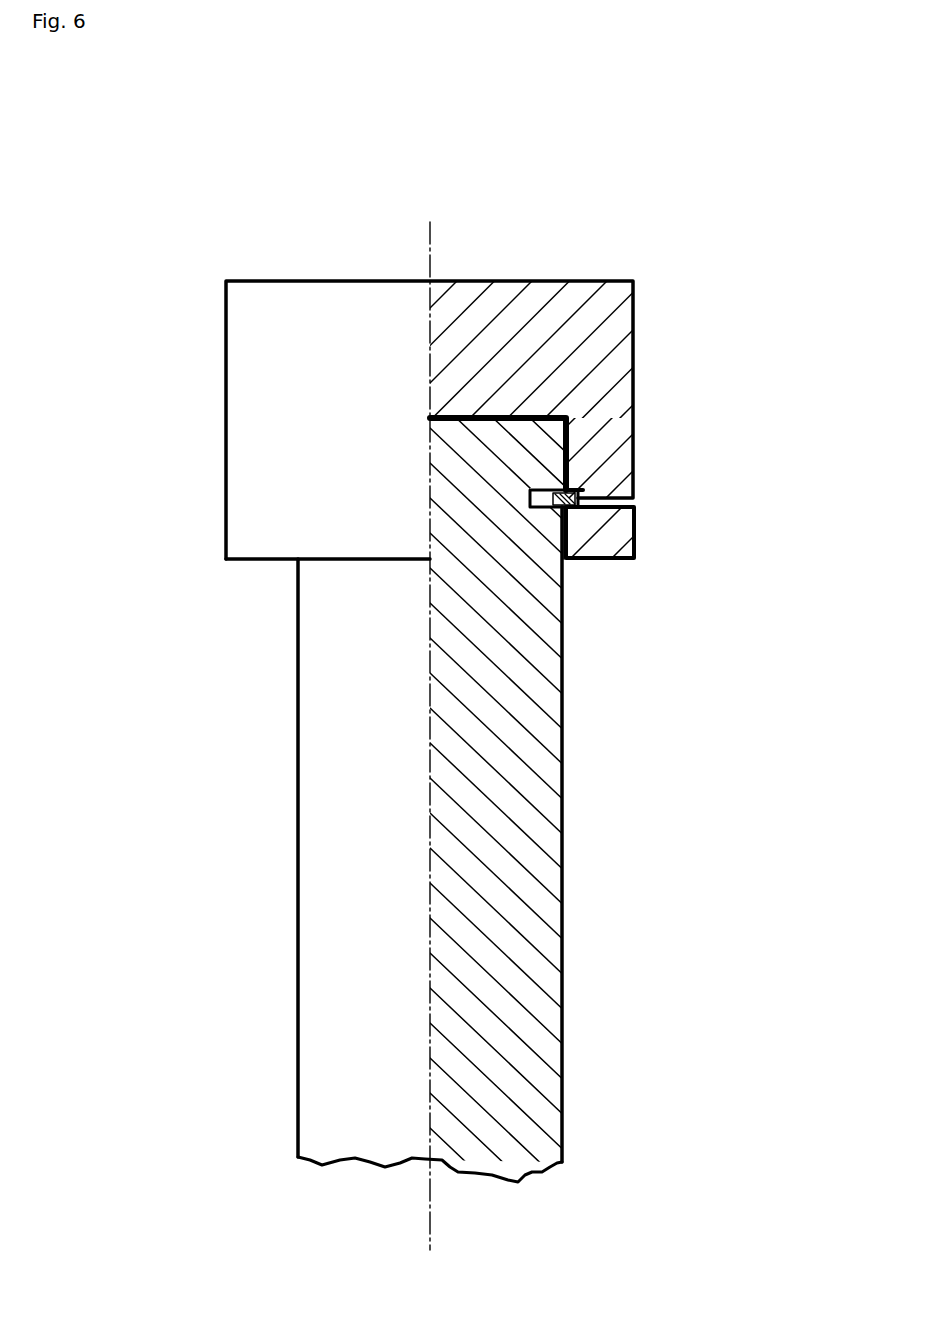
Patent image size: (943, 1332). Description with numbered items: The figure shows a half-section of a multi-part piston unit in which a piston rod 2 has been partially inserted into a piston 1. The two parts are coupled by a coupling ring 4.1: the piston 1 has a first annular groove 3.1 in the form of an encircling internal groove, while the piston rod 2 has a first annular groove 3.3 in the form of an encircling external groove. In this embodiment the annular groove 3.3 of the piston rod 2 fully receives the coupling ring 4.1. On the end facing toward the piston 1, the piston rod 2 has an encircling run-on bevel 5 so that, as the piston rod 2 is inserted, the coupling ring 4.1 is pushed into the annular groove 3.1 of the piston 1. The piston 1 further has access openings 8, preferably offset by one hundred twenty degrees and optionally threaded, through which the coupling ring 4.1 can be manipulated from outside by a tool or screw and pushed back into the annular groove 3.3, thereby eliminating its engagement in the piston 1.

The piston 1 is at (603, 335).
The piston rod 2 is at (483, 858).
The first annular groove of the piston 3.1 is at (585, 508).
The first annular groove of the piston rod 3.3 is at (565, 488).
The coupling ring 4.1 is at (550, 500).
The run-on bevel 5 is at (567, 543).
The access openings 8 is at (635, 500).